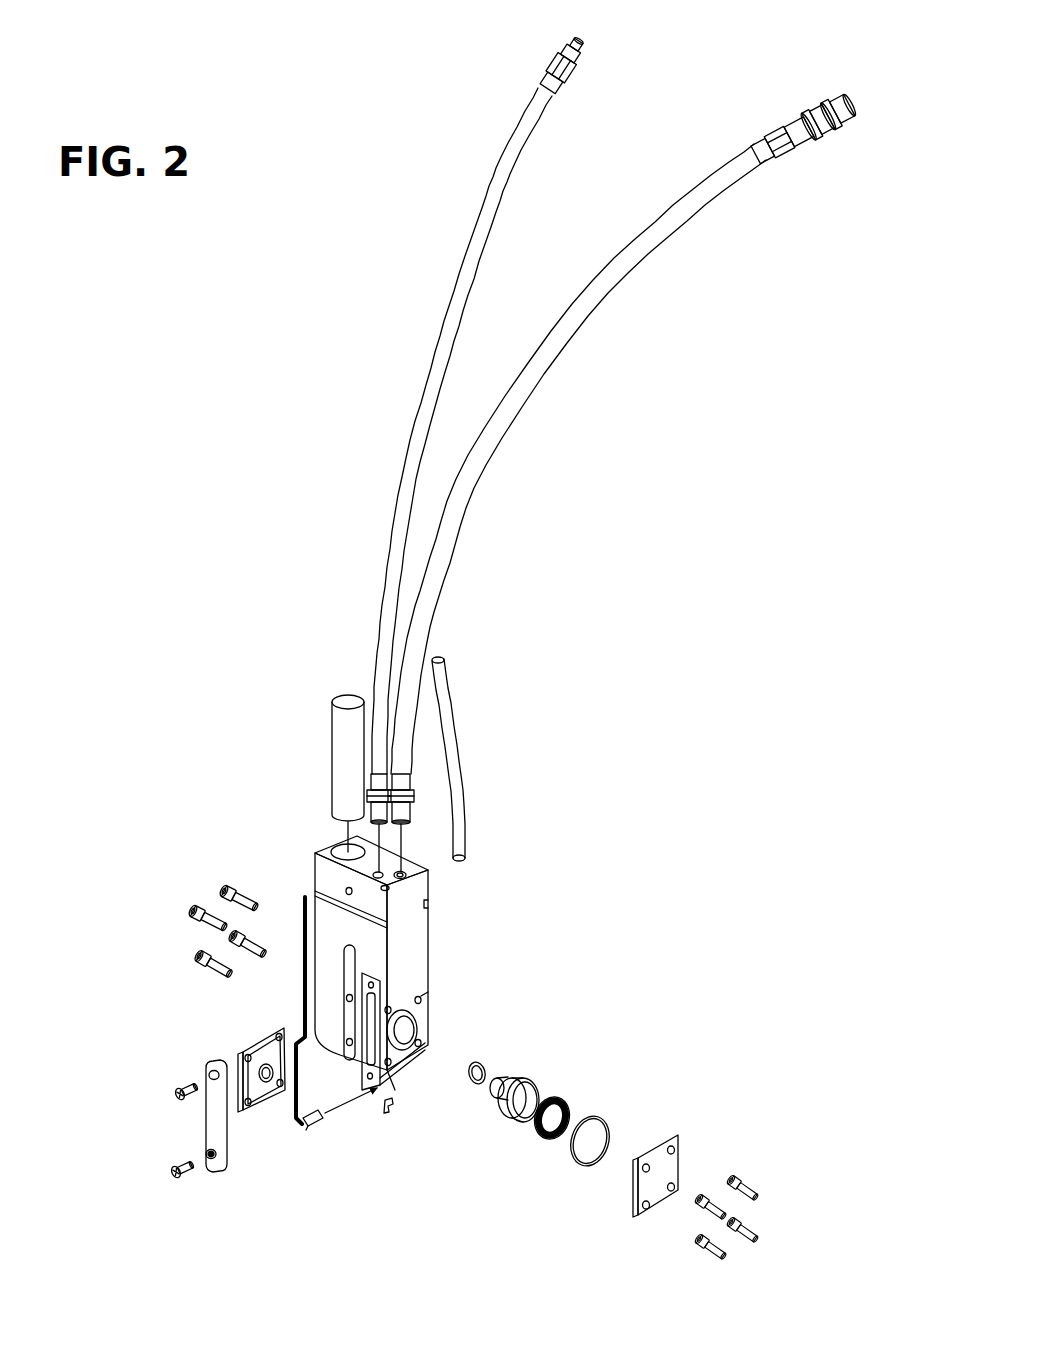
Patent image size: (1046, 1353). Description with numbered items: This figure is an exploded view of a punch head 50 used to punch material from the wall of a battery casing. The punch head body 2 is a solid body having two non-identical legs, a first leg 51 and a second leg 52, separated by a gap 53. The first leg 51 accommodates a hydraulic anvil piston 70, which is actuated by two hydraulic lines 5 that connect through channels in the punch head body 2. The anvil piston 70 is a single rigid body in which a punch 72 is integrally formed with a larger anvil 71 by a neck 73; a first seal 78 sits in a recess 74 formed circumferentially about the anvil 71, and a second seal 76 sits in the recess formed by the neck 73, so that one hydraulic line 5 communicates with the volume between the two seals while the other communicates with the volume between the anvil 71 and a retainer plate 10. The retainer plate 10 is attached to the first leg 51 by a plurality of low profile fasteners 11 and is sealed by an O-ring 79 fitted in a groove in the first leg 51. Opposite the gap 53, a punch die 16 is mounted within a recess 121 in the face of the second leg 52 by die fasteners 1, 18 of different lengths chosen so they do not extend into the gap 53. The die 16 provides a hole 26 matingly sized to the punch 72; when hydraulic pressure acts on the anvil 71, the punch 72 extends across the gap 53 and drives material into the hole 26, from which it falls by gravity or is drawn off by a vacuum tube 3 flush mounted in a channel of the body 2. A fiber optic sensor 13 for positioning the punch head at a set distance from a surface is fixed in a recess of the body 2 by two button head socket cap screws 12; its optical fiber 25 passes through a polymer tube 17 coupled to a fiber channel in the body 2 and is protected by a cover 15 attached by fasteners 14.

The die fastener 1 is at (213, 917).
The punch head body 2 is at (402, 938).
The vacuum tube 3 is at (345, 766).
The hydraulic lines 5 is at (483, 212).
The retainer plate 10 is at (676, 1135).
The fasteners 11 is at (745, 1180).
The button head socket cap screws 12 is at (394, 1105).
The fiber optic sensor 13 is at (317, 1127).
The fasteners 14 is at (176, 1090).
The cover 15 is at (205, 1133).
The punch die 16 is at (257, 1097).
The tube 17 is at (456, 803).
The die fastener 18 is at (248, 952).
The optical fiber 25 is at (305, 899).
The hole 26 is at (241, 1052).
The punch head 50 is at (402, 965).
The first leg 51 is at (430, 985).
The second leg 52 is at (327, 982).
The gap 53 is at (365, 1034).
The hydraulic anvil piston 70 is at (517, 1076).
The anvil 71 is at (527, 1090).
The punch 72 is at (474, 1105).
The neck 73 is at (465, 1117).
The recess 74 is at (507, 1103).
The second seal 76 is at (483, 1066).
The first seal 78 is at (558, 1098).
The O-ring 79 is at (580, 1158).
The recess 121 is at (347, 1013).